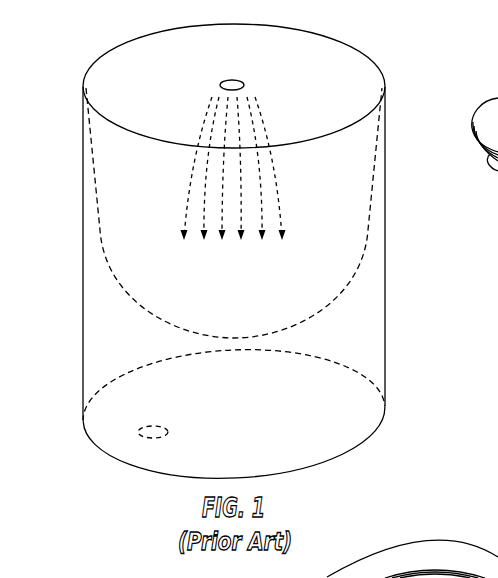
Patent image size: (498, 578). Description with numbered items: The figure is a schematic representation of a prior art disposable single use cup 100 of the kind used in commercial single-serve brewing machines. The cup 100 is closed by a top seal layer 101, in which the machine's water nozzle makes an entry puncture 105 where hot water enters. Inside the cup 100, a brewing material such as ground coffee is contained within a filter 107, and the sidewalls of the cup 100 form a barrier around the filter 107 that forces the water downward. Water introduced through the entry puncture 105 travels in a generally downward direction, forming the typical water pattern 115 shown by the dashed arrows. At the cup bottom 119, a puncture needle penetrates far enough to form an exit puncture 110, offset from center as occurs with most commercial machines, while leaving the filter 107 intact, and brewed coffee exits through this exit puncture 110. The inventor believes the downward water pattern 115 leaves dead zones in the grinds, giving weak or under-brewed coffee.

The disposable single use cup 100 is at (260, 265).
The top seal layer 101 is at (119, 57).
The entry puncture 105 is at (245, 75).
The filter 107 is at (370, 232).
The exit puncture 110 is at (147, 440).
The water pattern 115 is at (287, 176).
The cup bottom 119 is at (360, 428).